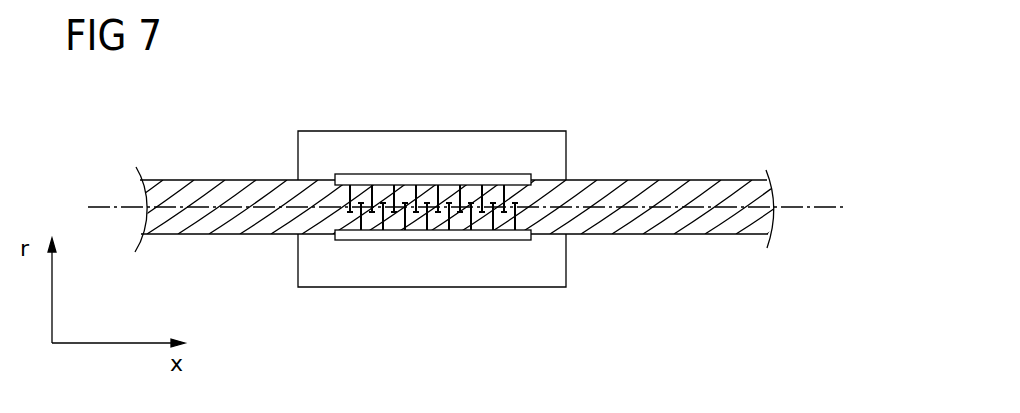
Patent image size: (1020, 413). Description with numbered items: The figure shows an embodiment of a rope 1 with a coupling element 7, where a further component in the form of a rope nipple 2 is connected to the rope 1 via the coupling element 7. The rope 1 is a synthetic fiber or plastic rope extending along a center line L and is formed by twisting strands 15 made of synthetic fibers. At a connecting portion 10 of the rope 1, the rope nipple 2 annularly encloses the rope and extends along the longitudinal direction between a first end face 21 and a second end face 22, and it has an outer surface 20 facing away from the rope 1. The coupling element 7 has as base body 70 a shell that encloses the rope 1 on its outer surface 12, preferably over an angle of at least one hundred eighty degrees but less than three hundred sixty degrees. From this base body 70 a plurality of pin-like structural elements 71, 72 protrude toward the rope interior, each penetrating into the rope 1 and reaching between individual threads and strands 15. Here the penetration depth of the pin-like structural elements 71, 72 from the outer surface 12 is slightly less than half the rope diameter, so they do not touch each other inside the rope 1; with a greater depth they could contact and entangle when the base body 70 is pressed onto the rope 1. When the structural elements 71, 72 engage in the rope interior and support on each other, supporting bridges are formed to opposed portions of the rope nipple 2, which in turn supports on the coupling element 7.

The rope 1 is at (449, 198).
The rope nipple 2 is at (435, 209).
The coupling element 7 is at (433, 202).
The connecting portion 10 is at (532, 192).
The outer surface 12 is at (720, 234).
The strands 15 is at (675, 217).
The outer surface 20 is at (413, 288).
The first end face 21 is at (297, 258).
The second end face 22 is at (567, 257).
The base body 70 is at (423, 180).
The pin-like structural elements 71 is at (393, 197).
The pin-like structural elements 72 is at (403, 222).
The center line L is at (801, 203).